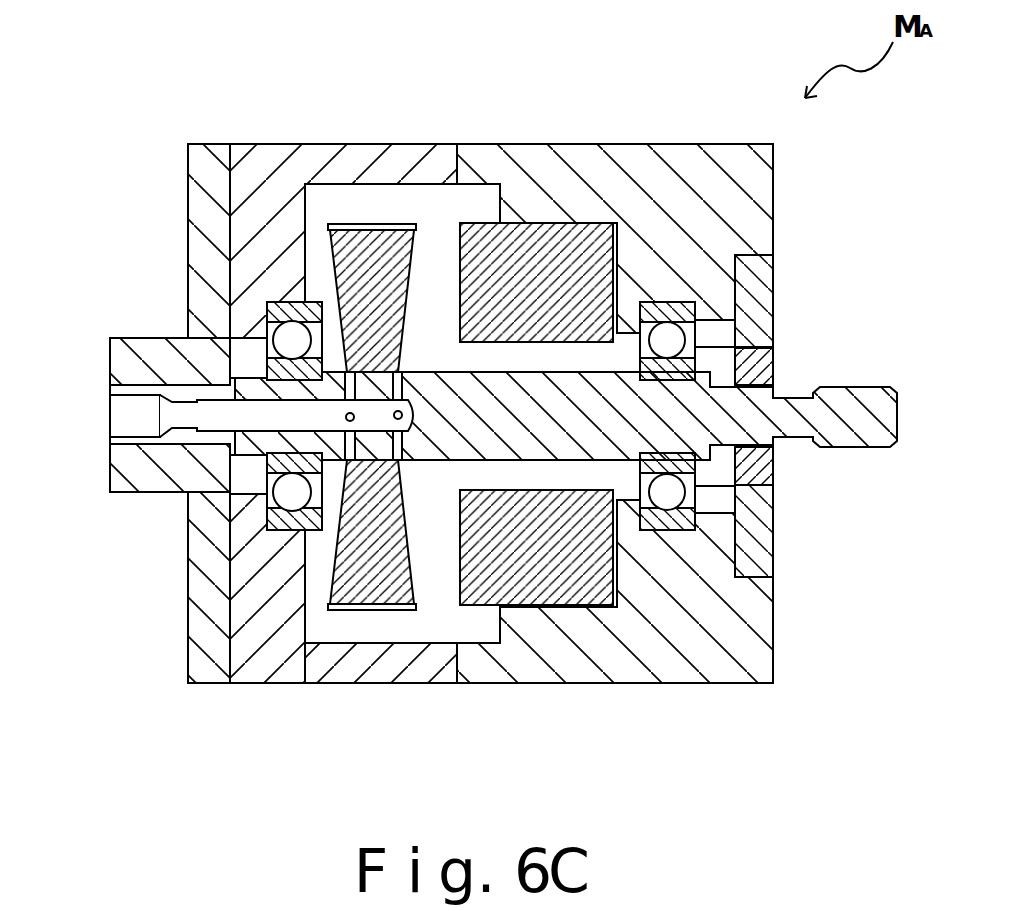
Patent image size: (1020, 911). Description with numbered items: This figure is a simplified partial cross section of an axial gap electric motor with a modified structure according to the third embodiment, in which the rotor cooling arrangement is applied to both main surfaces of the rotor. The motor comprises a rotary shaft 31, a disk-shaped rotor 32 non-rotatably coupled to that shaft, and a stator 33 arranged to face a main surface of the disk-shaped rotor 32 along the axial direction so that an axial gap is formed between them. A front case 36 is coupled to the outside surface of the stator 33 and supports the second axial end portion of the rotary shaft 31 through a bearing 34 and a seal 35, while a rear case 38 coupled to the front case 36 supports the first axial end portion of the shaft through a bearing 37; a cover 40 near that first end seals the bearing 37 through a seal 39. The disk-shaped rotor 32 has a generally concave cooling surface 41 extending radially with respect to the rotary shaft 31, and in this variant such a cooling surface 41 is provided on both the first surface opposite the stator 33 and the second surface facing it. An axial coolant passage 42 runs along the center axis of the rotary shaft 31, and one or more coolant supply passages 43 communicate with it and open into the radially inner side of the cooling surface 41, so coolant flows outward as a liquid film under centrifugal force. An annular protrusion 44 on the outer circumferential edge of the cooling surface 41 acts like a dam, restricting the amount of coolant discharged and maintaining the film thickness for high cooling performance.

The rotary shaft 31 is at (860, 390).
The disk-shaped rotor 32 is at (388, 224).
The stator 33 is at (552, 222).
The bearing 34 is at (700, 337).
The seal 35 is at (775, 368).
The front case 36 is at (773, 620).
The bearing 37 is at (290, 340).
The rear case 38 is at (172, 348).
The seal 39 is at (390, 686).
The cover 40 is at (110, 468).
The cooling surface 41 is at (405, 547).
The axial coolant passage 42 is at (250, 462).
The coolant supply passages 43 is at (360, 443).
The annular protrusion 44 is at (330, 226).